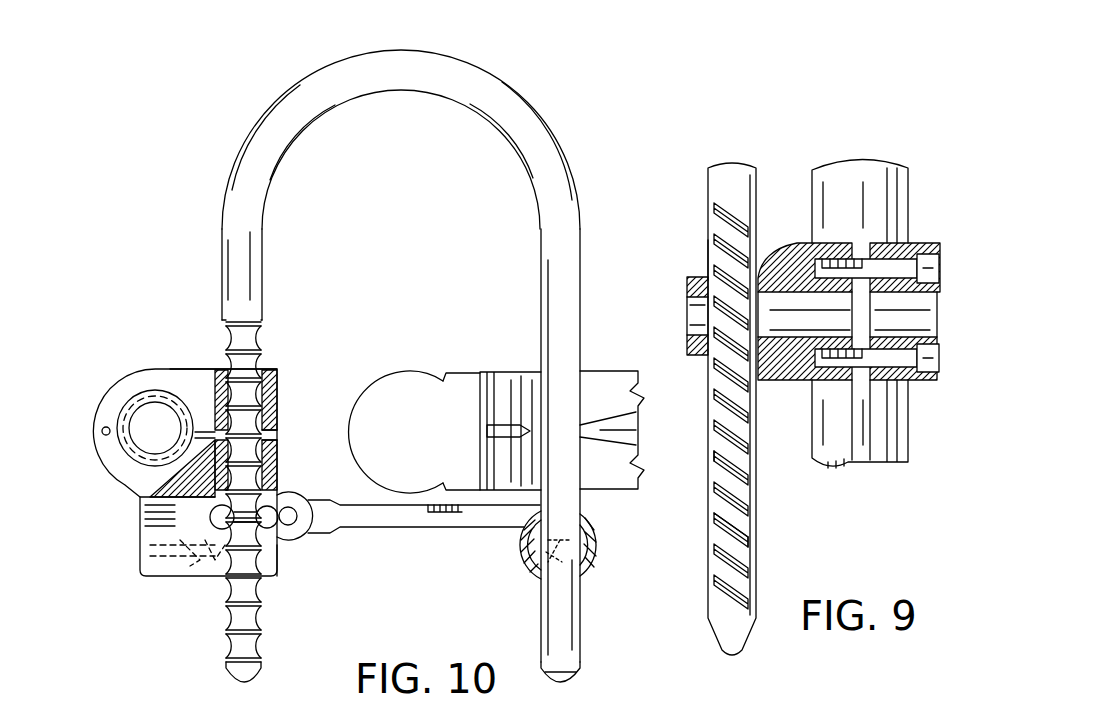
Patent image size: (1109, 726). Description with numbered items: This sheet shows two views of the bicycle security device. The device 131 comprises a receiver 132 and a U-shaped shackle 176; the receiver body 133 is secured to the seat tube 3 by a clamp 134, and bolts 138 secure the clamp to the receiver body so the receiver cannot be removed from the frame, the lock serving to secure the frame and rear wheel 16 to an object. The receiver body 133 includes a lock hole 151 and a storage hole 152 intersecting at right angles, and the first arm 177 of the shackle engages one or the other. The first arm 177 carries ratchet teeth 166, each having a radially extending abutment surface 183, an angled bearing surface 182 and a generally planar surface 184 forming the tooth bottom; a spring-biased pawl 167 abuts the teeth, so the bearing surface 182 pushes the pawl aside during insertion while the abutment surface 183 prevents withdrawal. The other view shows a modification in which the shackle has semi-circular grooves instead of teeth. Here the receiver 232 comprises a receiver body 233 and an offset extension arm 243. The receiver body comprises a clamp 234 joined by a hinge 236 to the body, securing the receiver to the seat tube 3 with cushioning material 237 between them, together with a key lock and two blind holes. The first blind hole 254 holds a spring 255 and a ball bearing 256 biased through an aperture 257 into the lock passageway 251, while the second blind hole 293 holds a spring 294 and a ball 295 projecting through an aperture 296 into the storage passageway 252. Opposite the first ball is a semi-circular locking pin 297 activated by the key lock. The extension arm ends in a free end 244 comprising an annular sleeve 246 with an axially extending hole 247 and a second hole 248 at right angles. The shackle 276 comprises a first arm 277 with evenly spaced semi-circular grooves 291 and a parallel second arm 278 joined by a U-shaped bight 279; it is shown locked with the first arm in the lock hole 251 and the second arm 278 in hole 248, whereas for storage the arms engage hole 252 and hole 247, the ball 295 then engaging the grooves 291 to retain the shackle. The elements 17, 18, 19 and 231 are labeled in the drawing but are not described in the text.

In FIG. 10, the seat tube 3 is at (148, 400).
In FIG. 9, the seat tube 3 is at (870, 311).
In FIG. 10, the rear wheel 16 is at (414, 388).
In FIG. 10, the ball surface 17 is at (416, 370).
In FIG. 10, the shank 18 is at (458, 372).
In FIG. 10, the pin 19 is at (612, 420).
In FIG. 9, the device 131 is at (789, 262).
In FIG. 9, the receiver 132 is at (800, 381).
In FIG. 9, the receiver body 133 is at (840, 385).
In FIG. 9, the clamp 134 is at (892, 467).
In FIG. 9, the bolts 138 is at (925, 258).
In FIG. 9, the lock hole 151 is at (783, 307).
In FIG. 9, the storage hole 152 is at (708, 260).
In FIG. 9, the ratchet teeth 166 is at (755, 535).
In FIG. 9, the pawl 167 is at (715, 311).
In FIG. 9, the shackle 176 is at (744, 386).
In FIG. 9, the first arm 177 is at (750, 197).
In FIG. 9, the bearing surface 182 is at (723, 462).
In FIG. 9, the abutment surface 183 is at (735, 573).
In FIG. 9, the planar surface 184 is at (740, 508).
In FIG. 10, the hook clamp assembly 231 is at (229, 440).
In FIG. 10, the receiver 232 is at (229, 477).
In FIG. 10, the receiver body 233 is at (278, 562).
In FIG. 10, the clamp 234 is at (166, 378).
In FIG. 10, the hinge 236 is at (100, 425).
In FIG. 10, the cushioning material 237 is at (140, 405).
In FIG. 10, the extension arm 243 is at (417, 523).
In FIG. 10, the free end 244 is at (570, 556).
In FIG. 10, the annular sleeve 246 is at (597, 560).
In FIG. 10, the axially extending hole 247 is at (537, 573).
In FIG. 10, the second hole 248 is at (566, 582).
In FIG. 10, the lock hole 251 is at (267, 578).
In FIG. 10, the passageway 252 is at (263, 633).
In FIG. 10, the first blind hole 254 is at (277, 442).
In FIG. 10, the spring 255 is at (160, 522).
In FIG. 10, the ball bearing 256 is at (236, 510).
In FIG. 10, the aperture 257 is at (280, 472).
In FIG. 10, the shackle 276 is at (384, 345).
In FIG. 10, the first arm 277 is at (230, 265).
In FIG. 10, the second arm 278 is at (568, 258).
In FIG. 10, the U-shaped bight 279 is at (400, 62).
In FIG. 10, the semi-circular grooves 291 is at (280, 493).
In FIG. 10, the second blind hole 293 is at (196, 556).
In FIG. 10, the spring 294 is at (152, 556).
In FIG. 10, the ball 295 is at (205, 562).
In FIG. 10, the aperture 296 is at (232, 560).
In FIG. 10, the semi-circular locking pin 297 is at (301, 536).